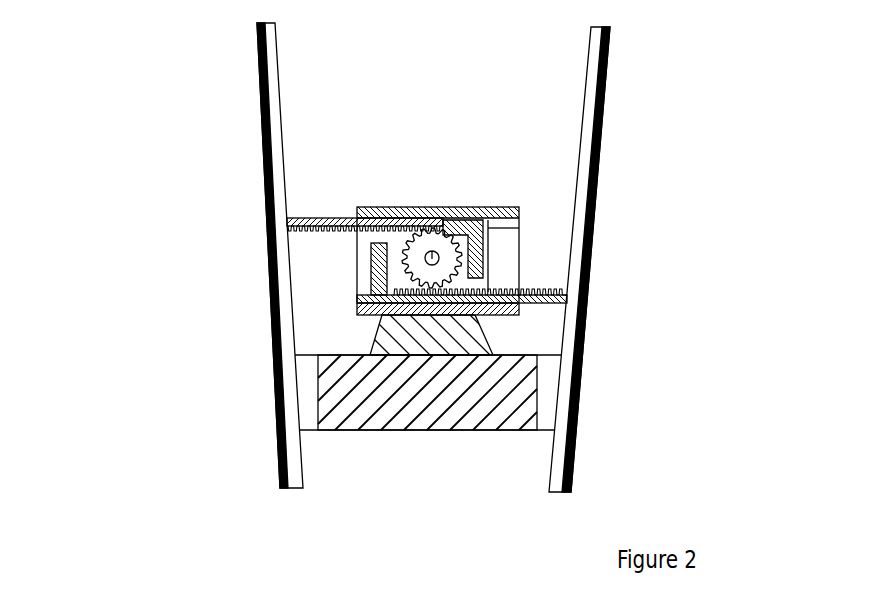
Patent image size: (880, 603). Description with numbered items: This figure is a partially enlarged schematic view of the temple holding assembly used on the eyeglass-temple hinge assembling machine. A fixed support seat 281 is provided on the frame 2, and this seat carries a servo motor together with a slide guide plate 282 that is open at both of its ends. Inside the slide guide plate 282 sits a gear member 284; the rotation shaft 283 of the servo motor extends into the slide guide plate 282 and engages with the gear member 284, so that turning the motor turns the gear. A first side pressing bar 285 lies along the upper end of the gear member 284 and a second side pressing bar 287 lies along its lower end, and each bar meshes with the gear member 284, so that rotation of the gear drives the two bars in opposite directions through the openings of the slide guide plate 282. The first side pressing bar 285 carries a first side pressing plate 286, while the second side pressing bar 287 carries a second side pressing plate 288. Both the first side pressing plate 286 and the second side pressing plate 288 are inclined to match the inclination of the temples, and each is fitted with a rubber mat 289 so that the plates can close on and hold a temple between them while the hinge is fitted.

The frame 2 is at (507, 390).
The fixed support seat 281 is at (437, 333).
The slide guide plate 282 is at (502, 252).
The rotation shaft 283 is at (433, 255).
The gear member 284 is at (410, 247).
The first side pressing bar 285 is at (333, 215).
The first side pressing plate 286 is at (261, 94).
The second side pressing bar 287 is at (377, 292).
The second side pressing plate 288 is at (603, 128).
The rubber mat 289 is at (600, 170).